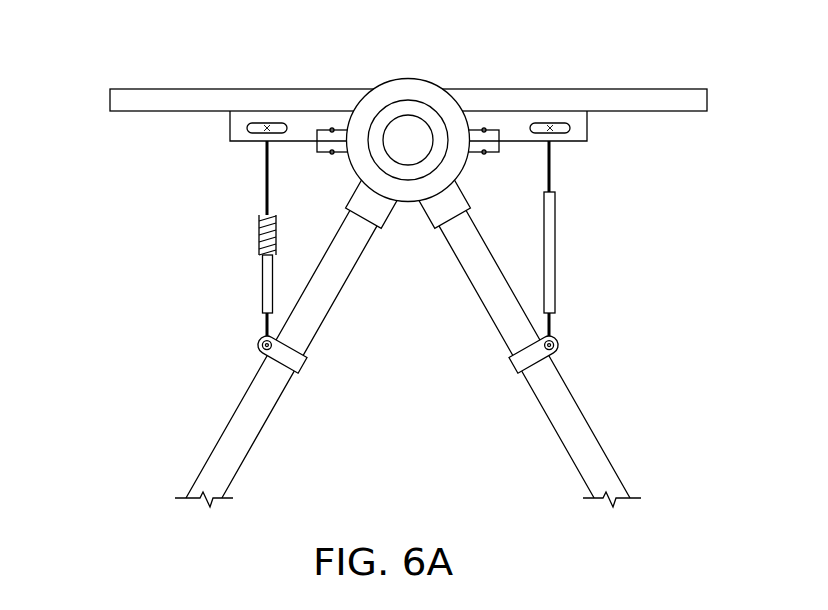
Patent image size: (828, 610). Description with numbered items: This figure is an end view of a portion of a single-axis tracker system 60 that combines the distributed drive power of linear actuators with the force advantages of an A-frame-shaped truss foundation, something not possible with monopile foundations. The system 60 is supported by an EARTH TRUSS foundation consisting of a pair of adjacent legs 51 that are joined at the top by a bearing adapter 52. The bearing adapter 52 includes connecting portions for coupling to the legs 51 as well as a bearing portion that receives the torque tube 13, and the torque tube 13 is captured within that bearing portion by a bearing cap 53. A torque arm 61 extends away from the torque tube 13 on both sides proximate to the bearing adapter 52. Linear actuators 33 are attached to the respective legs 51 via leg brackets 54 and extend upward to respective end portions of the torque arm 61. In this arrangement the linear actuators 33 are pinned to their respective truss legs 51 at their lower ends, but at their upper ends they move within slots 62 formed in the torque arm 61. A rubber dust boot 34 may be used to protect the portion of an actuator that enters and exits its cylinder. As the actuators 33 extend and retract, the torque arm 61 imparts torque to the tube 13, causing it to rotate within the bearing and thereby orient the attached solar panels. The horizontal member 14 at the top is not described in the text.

The tracker system 60 is at (136, 49).
The crossbar 14 is at (577, 89).
The torque tube 13 is at (408, 140).
The bearing cap 53 is at (420, 78).
The bearing adapter 52 is at (415, 210).
The legs 51 is at (228, 422).
The torque arm 61 is at (230, 125).
The slots 62 is at (260, 134).
The linear actuators 33 is at (262, 297).
The dust boot 34 is at (258, 237).
The leg brackets 54 is at (260, 343).